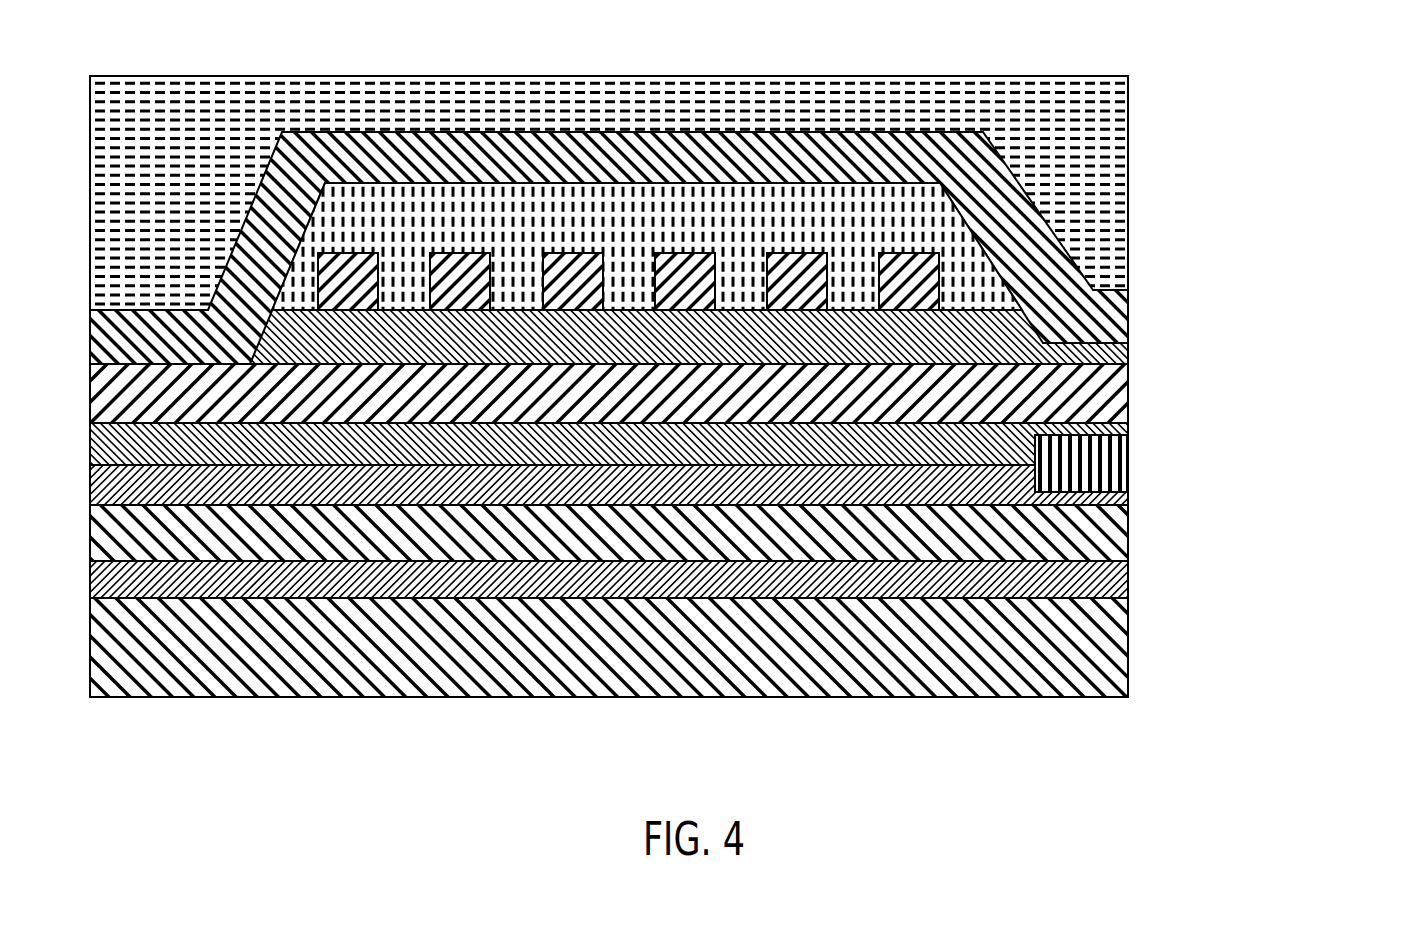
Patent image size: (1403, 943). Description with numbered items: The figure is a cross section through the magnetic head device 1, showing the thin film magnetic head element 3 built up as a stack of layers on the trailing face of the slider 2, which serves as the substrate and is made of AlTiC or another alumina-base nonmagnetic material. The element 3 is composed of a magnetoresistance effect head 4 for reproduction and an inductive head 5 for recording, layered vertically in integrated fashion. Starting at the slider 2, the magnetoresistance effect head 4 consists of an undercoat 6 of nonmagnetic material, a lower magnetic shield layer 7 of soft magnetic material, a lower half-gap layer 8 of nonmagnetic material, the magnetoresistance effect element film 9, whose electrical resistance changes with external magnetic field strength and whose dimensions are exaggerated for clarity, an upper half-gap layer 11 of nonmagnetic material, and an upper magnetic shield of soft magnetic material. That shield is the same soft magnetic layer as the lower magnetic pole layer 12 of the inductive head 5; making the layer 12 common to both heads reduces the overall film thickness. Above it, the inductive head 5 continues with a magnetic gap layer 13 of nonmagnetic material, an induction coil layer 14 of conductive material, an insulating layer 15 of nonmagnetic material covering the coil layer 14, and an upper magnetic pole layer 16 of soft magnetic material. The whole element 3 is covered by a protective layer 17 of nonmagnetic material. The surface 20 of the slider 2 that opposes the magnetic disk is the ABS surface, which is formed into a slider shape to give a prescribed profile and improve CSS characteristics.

The magnetic head device 1 is at (1245, 108).
The slider 2 is at (1047, 656).
The thin film magnetic head element 3 is at (1336, 290).
The magnetoresistance effect head 4 is at (1148, 367).
The inductive head 5 is at (1183, 417).
The undercoat 6 is at (1047, 591).
The lower magnetic shield layer 7 is at (1047, 548).
The lower half-gap layer 8 is at (127, 495).
The magnetoresistance effect element film 9 is at (1074, 474).
The upper half-gap layer 11 is at (125, 455).
The lower magnetic pole layer 12 is at (125, 399).
The magnetic gap layer 13 is at (320, 344).
The induction coil layer 14 is at (335, 294).
The insulating layer 15 is at (837, 233).
The upper magnetic pole layer 16 is at (1065, 328).
The protective layer 17 is at (157, 144).
The ABS surface 20 is at (1128, 247).